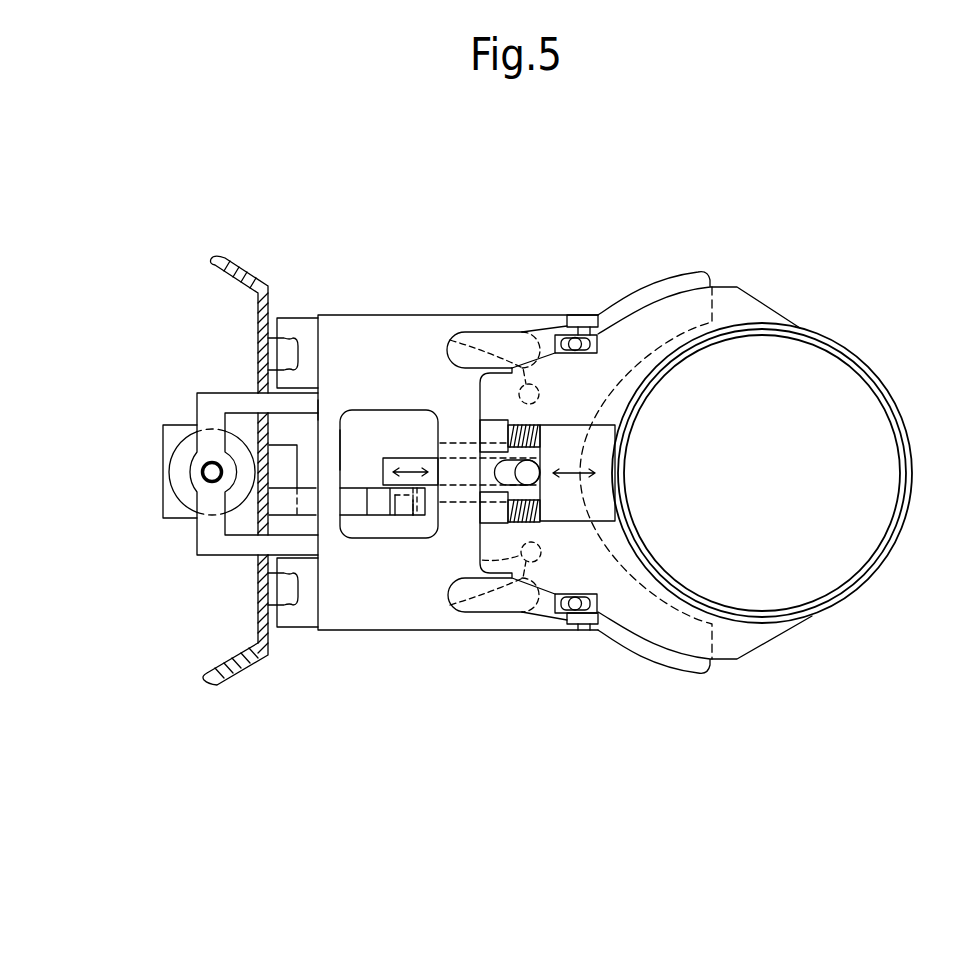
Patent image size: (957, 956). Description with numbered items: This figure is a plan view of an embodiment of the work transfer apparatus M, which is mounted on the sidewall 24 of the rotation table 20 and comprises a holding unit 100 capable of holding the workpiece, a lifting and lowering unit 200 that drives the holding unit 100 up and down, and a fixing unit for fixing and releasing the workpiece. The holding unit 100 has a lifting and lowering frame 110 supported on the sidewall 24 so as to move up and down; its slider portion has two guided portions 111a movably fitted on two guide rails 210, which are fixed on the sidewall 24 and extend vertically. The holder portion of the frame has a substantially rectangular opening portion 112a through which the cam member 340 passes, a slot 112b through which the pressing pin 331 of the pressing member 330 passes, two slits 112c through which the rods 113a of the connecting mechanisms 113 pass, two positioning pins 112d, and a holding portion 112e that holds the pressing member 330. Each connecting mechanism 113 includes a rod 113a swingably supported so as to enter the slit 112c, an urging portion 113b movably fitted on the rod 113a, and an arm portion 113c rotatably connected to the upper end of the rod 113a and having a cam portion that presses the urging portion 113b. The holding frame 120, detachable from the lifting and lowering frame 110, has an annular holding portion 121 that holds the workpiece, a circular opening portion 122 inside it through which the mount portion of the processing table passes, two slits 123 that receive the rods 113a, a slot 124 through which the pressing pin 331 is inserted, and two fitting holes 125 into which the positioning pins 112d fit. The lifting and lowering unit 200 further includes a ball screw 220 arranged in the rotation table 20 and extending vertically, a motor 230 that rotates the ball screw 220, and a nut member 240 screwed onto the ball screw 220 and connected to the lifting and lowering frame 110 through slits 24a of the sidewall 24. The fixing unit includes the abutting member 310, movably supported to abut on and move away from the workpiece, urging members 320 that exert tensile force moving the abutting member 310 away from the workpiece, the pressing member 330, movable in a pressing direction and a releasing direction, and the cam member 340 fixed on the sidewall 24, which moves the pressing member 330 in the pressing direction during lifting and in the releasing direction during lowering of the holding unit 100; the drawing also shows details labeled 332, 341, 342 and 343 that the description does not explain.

The rotation table 20 is at (248, 421).
The sidewall 24 is at (270, 302).
The slits 24a is at (258, 392).
The holding unit 100 is at (586, 476).
The lifting and lowering frame 110 is at (390, 316).
The guided portions 111a is at (300, 328).
The opening portion 112a is at (372, 411).
The slot 112b is at (496, 479).
The slits 112c is at (597, 314).
The positioning pins 112d is at (453, 338).
The holding portion 112e is at (453, 443).
The connecting mechanism 113 is at (530, 476).
The rod 113a is at (572, 324).
The urging portion 113b is at (557, 334).
The arm portion 113c is at (485, 347).
The holding frame 120 is at (762, 424).
The holding portion 121 is at (797, 336).
The opening portion 122 is at (846, 374).
The slits 123 is at (696, 489).
The slot 124 is at (461, 536).
The fitting holes 125 is at (538, 390).
The lifting and lowering unit 200 is at (181, 449).
The guide rails 210 is at (277, 353).
The ball screw 220 is at (203, 468).
The motor 230 is at (190, 500).
The nut member 240 is at (208, 503).
The abutting member 310 is at (604, 438).
The urging members 320 is at (517, 424).
The pressing member 330 is at (419, 446).
The pressing pin 331 is at (534, 472).
The shaft 332 is at (398, 515).
The cam member 340 is at (360, 544).
The holder wall 341 is at (282, 452).
The gear 342 is at (378, 496).
The pin 343 is at (410, 515).
The work transfer apparatus M is at (591, 274).